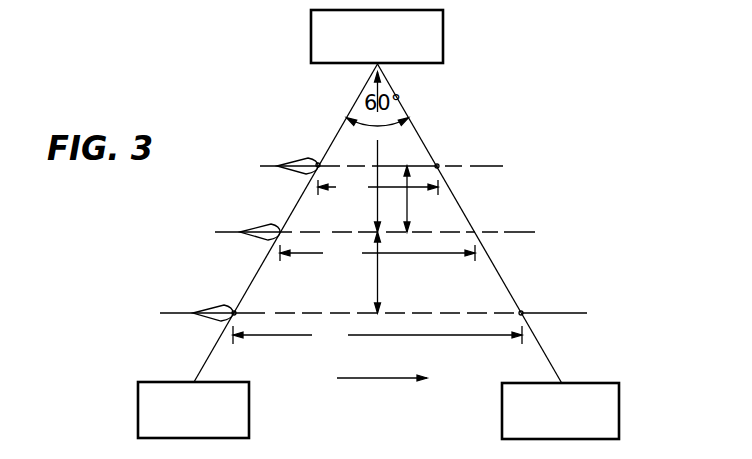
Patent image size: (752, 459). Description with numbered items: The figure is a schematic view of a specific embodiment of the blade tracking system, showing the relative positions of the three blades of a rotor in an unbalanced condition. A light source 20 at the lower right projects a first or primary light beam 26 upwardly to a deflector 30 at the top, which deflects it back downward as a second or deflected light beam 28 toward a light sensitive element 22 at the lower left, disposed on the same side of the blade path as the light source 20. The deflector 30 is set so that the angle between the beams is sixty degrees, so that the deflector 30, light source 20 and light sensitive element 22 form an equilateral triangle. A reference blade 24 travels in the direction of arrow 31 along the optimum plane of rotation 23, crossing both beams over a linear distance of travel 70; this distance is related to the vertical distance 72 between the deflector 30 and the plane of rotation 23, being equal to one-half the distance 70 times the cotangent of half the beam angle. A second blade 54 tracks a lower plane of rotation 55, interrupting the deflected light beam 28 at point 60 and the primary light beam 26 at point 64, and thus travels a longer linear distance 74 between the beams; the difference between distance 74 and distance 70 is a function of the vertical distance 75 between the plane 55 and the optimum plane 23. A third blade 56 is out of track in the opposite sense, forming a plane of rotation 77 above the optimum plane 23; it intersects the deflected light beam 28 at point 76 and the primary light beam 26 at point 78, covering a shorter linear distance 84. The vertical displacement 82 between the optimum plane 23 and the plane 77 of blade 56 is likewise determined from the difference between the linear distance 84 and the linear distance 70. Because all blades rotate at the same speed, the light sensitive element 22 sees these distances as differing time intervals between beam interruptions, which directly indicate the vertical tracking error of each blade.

The light source 20 is at (619, 415).
The light sensitive element 22 is at (249, 413).
The path of rotation 23 is at (523, 232).
The whirling blade 24 is at (265, 225).
The first light beam 26 is at (422, 138).
The deflected light beam 28 is at (340, 127).
The deflector 30 is at (443, 45).
The arrow 31 is at (378, 380).
The rotor blade 54 is at (222, 305).
The plane of rotation 55 is at (560, 313).
The third blade 56 is at (300, 160).
The interruption point 60 is at (234, 312).
The intersection point 64 is at (522, 313).
The linear distance of travel 70 is at (377, 253).
The vertical distance 72 is at (378, 153).
The linear distance 74 is at (377, 336).
The vertical distance 75 is at (378, 285).
The intersection point 76 is at (318, 158).
The plane of rotation 77 is at (497, 167).
The intersection point 78 is at (438, 167).
The vertical displacement 82 is at (407, 205).
The linear distance 84 is at (378, 187).